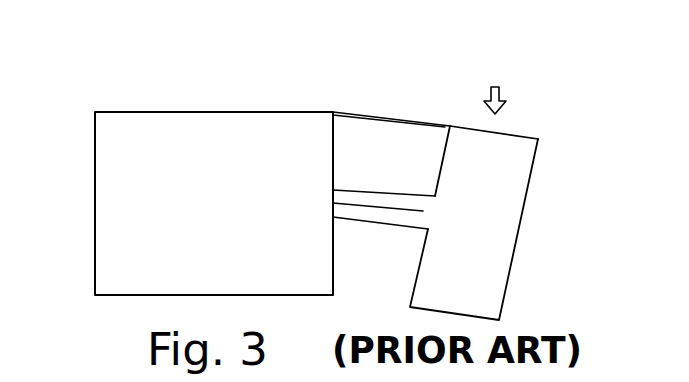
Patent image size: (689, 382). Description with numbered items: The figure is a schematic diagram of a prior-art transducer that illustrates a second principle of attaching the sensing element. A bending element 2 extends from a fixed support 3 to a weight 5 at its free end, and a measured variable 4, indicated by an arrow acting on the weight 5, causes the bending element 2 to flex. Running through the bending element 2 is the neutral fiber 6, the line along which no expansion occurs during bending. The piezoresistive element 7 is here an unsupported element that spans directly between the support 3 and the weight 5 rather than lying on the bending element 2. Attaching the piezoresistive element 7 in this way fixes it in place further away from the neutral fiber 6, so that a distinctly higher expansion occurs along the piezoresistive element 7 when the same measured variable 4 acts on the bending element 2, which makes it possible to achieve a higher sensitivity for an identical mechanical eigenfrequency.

The bending element 2 is at (385, 218).
The support 3 is at (132, 150).
The measured variable 4 is at (495, 89).
The weight 5 is at (488, 285).
The neutral fiber 6 is at (423, 211).
The piezoresistive element 7 is at (398, 121).